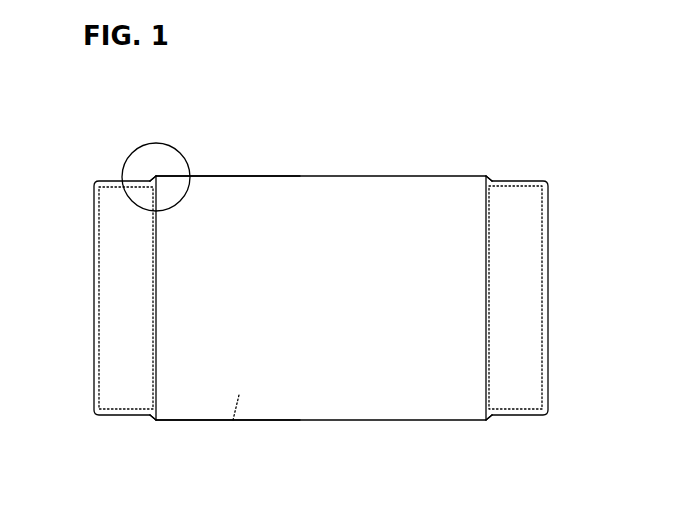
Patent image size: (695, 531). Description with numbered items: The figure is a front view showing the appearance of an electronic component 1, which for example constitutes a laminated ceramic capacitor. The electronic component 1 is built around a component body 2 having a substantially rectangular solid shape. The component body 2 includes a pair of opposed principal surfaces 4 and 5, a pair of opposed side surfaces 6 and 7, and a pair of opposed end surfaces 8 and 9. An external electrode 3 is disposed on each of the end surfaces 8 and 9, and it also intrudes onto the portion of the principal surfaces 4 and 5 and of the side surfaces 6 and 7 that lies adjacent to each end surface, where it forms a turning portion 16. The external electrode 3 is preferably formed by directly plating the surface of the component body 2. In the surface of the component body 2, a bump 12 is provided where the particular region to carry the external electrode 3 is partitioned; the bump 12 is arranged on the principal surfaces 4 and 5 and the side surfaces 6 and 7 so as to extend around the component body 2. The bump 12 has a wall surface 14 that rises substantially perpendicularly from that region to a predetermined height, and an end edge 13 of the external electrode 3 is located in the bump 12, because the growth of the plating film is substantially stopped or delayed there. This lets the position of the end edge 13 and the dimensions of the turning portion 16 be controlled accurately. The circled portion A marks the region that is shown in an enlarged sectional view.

The electronic component 1 is at (67, 114).
The component body 2 is at (303, 176).
The external electrode 3 is at (105, 414).
The principal surface 4 is at (402, 175).
The principal surface 5 is at (337, 421).
The side surface 6 is at (247, 200).
The side surface 7 is at (233, 421).
The end surface 8 is at (99, 300).
The end surface 9 is at (548, 286).
The bump 12 is at (156, 245).
The end edge 13 is at (150, 421).
The wall surface 14 is at (155, 333).
The turning portion 16 is at (125, 388).
The portion A is at (135, 151).